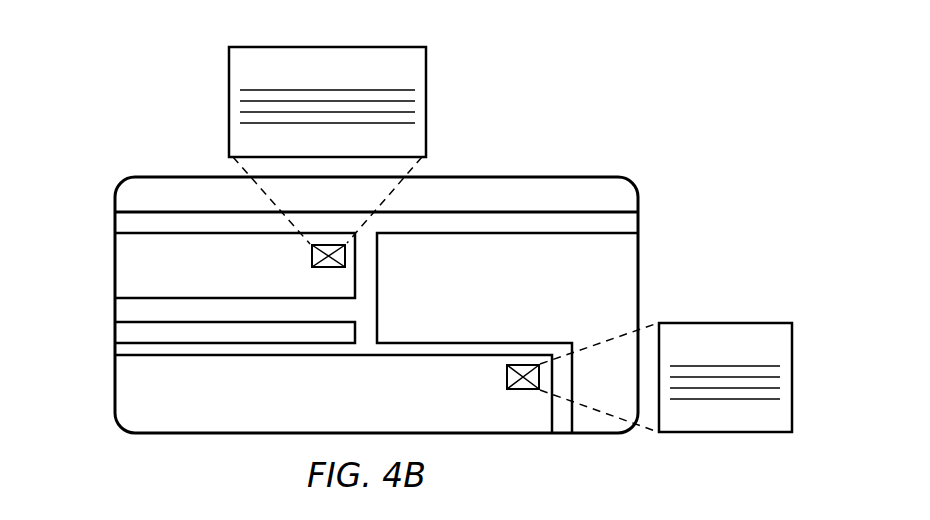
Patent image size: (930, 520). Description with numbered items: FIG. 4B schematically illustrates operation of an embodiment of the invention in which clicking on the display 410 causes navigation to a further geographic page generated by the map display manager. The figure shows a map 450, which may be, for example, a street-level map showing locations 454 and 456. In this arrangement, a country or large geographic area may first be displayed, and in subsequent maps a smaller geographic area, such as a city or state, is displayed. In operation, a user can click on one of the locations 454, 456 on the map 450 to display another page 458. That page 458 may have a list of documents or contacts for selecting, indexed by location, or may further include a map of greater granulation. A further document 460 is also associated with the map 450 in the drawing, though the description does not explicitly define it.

The display 410 is at (572, 84).
The map 450 is at (116, 267).
The location 454 is at (312, 256).
The location 456 is at (507, 376).
The page 458 is at (725, 433).
The sales document 460 is at (229, 90).